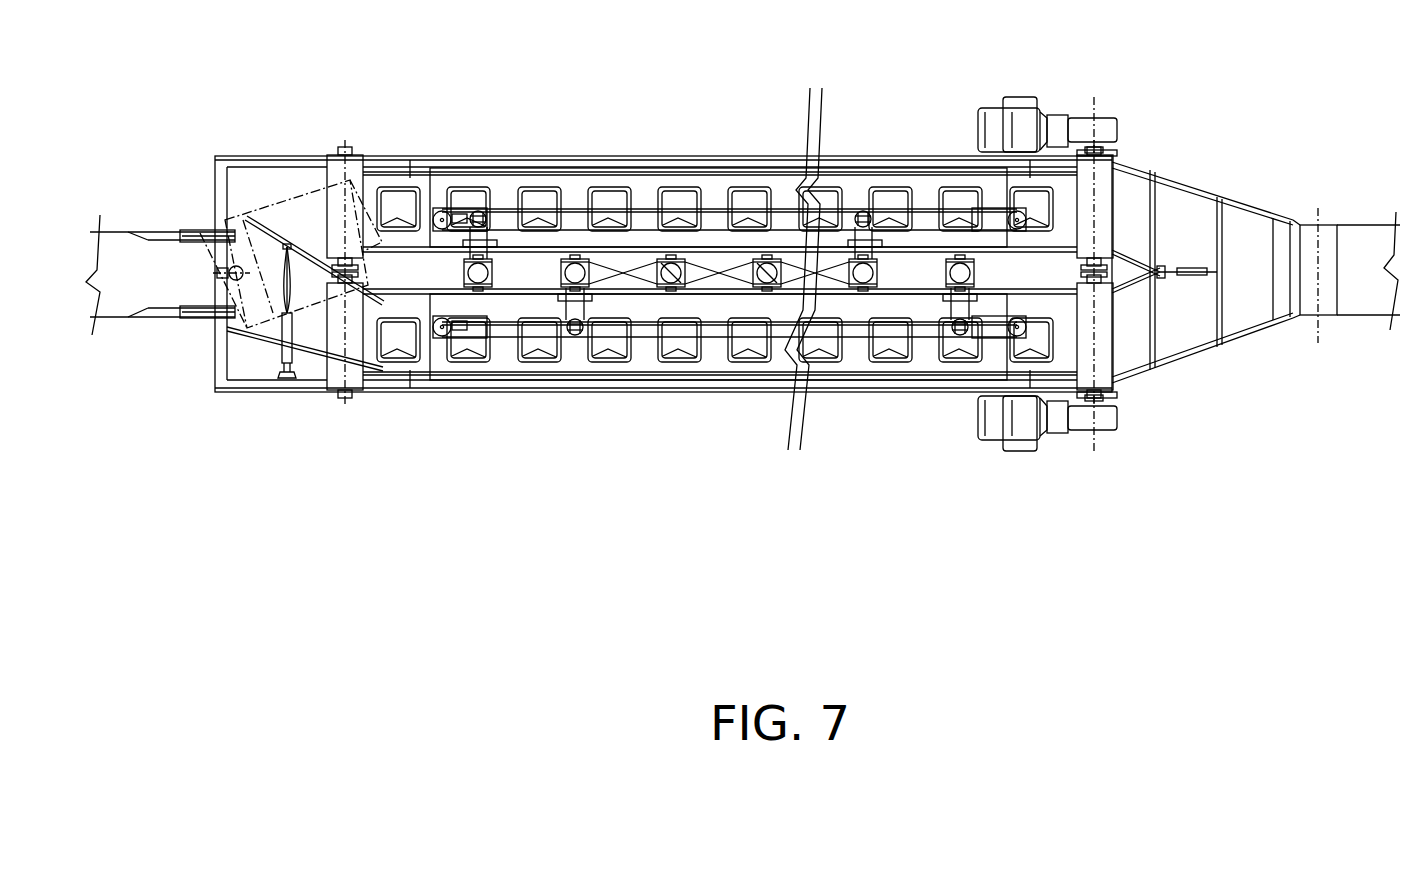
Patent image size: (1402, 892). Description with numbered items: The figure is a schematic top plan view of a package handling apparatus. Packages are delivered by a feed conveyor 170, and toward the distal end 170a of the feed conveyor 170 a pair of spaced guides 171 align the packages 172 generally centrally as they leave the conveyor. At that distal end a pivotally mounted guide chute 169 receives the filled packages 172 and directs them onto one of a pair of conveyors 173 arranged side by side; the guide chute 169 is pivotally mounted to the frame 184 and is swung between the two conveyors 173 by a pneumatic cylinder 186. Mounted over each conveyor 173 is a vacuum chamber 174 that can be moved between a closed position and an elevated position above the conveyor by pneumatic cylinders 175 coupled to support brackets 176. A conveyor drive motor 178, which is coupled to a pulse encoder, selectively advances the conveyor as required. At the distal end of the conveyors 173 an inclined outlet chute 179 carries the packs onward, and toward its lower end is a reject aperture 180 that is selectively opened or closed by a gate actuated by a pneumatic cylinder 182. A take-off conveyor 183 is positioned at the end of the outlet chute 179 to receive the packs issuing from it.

The guide chute 169 is at (310, 350).
The feed conveyor 170 is at (108, 207).
The distal end 170a is at (183, 222).
The spaced guides 171 is at (210, 272).
The packages 172 is at (413, 343).
The conveyors 173 is at (360, 157).
The vacuum chamber 174 is at (552, 390).
The pneumatic cylinders 175 is at (678, 268).
The support brackets 176 is at (498, 240).
The conveyor drive motor 178 is at (1007, 125).
The inclined outlet chute 179 is at (1168, 215).
The reject aperture 180 is at (1232, 237).
The pneumatic cylinder 182 is at (1192, 277).
The take-off conveyor 183 is at (1365, 285).
The frame 184 is at (270, 157).
The pneumatic cylinder 186 is at (277, 353).